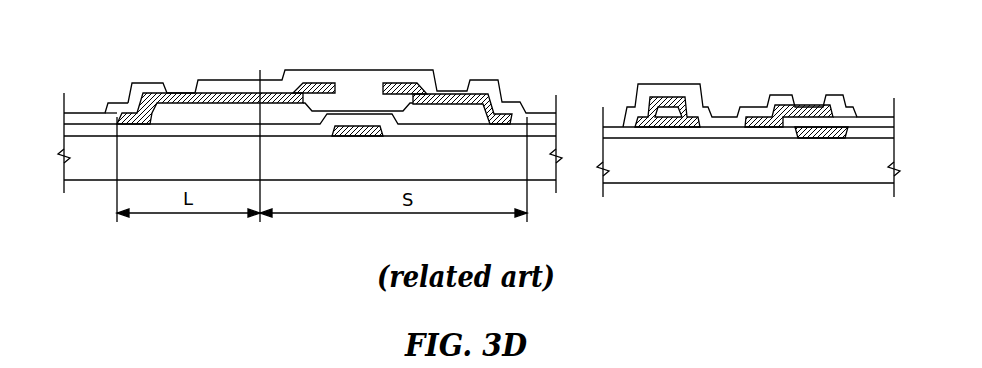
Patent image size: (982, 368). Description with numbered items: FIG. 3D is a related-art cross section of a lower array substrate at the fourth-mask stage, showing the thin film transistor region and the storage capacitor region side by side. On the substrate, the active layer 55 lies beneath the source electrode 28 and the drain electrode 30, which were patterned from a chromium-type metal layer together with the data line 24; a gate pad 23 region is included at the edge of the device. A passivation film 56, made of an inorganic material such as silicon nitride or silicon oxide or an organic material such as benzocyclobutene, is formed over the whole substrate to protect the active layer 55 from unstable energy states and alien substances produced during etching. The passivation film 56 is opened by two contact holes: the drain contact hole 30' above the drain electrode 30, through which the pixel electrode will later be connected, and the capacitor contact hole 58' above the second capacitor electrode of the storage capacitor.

The gate pad 23 is at (182, 86).
The data line 24 is at (232, 96).
The source electrode 28 is at (318, 88).
The drain electrode 30 is at (462, 79).
The drain contact hole 30' is at (424, 61).
The active layer 55 is at (418, 118).
The passivation film 56 is at (364, 80).
The capacitor contact hole 58' is at (741, 92).